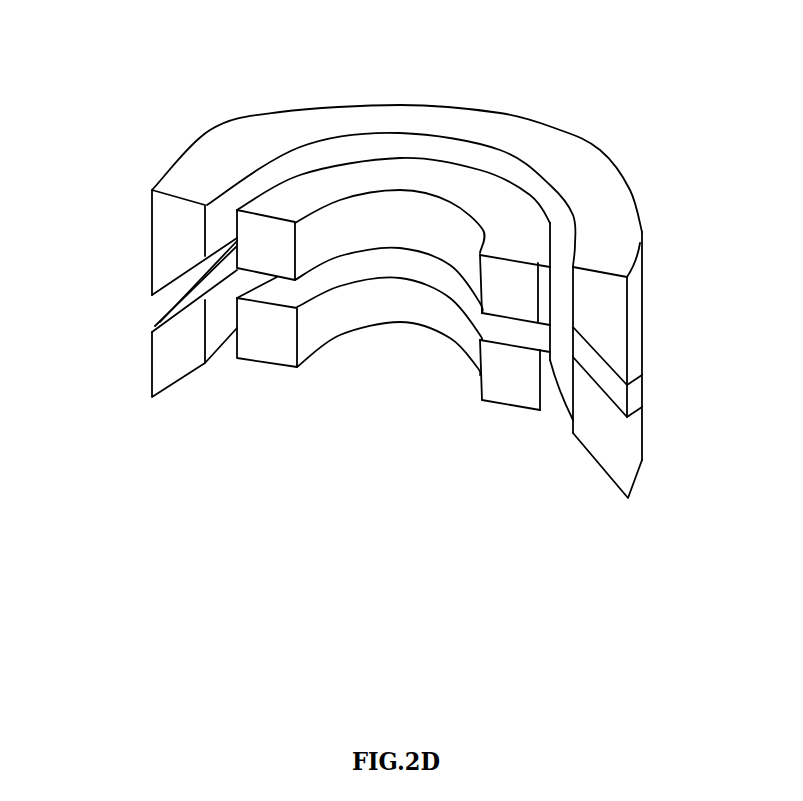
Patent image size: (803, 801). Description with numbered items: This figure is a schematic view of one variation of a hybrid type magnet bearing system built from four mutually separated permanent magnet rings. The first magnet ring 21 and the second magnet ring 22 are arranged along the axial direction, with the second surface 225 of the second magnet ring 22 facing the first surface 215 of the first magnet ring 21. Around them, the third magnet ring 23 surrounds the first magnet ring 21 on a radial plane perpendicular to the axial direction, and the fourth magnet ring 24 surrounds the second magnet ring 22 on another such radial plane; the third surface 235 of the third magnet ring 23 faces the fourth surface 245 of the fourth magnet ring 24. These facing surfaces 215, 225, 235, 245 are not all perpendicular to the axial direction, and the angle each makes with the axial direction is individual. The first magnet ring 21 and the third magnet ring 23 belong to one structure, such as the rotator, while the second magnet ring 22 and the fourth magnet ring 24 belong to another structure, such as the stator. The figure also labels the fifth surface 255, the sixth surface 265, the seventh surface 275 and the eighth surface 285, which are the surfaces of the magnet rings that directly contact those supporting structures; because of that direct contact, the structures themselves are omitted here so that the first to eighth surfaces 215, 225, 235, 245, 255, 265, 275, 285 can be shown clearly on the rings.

The first magnet ring 21 is at (273, 243).
The second magnet ring 22 is at (268, 355).
The third magnet ring 23 is at (173, 227).
The fourth magnet ring 24 is at (177, 377).
The first surface 215 is at (277, 277).
The second surface 225 is at (372, 268).
The third surface 235 is at (173, 283).
The fourth surface 245 is at (628, 400).
The fifth surface 255 is at (497, 196).
The sixth surface 265 is at (512, 405).
The seventh surface 275 is at (323, 123).
The eighth surface 285 is at (605, 470).